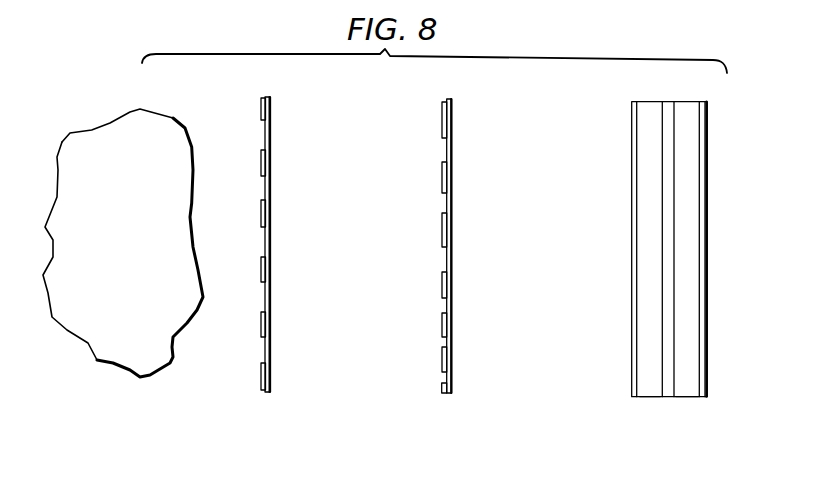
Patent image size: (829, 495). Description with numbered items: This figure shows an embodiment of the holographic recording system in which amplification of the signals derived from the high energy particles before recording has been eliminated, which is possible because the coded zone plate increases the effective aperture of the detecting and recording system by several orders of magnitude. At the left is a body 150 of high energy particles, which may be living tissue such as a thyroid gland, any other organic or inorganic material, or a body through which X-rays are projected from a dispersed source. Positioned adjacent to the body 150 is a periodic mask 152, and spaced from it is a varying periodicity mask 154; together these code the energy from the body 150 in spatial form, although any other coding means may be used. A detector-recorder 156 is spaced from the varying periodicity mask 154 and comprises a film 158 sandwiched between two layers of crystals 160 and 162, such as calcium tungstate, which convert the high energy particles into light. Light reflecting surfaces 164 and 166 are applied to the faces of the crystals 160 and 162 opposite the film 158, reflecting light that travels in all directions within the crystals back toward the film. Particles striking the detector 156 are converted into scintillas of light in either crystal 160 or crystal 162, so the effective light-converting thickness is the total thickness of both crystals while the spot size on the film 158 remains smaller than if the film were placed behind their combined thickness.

The body of high energy particles 150 is at (103, 140).
The periodic mask 152 is at (268, 103).
The varying periodicity mask 154 is at (449, 110).
The detector-recorder 156 is at (649, 266).
The film 158 is at (670, 107).
The crystal layer 160 is at (647, 392).
The crystal layer 162 is at (680, 407).
The light reflecting surface 164 is at (635, 103).
The light reflecting surface 166 is at (702, 105).